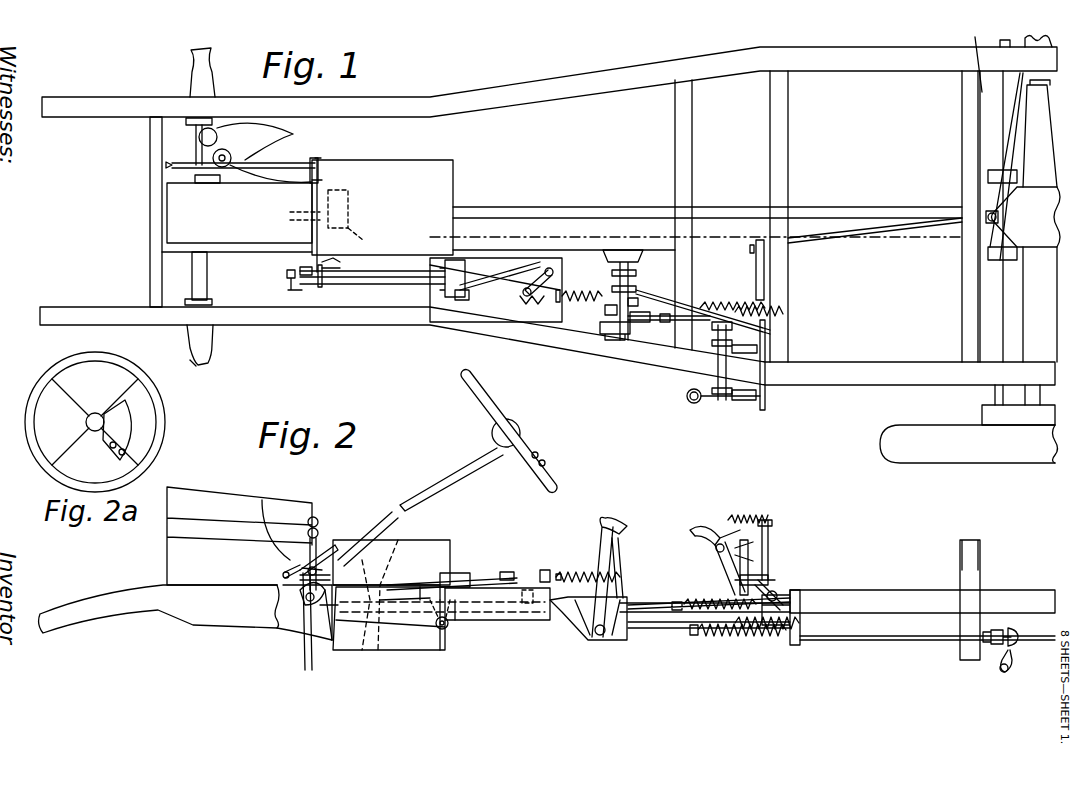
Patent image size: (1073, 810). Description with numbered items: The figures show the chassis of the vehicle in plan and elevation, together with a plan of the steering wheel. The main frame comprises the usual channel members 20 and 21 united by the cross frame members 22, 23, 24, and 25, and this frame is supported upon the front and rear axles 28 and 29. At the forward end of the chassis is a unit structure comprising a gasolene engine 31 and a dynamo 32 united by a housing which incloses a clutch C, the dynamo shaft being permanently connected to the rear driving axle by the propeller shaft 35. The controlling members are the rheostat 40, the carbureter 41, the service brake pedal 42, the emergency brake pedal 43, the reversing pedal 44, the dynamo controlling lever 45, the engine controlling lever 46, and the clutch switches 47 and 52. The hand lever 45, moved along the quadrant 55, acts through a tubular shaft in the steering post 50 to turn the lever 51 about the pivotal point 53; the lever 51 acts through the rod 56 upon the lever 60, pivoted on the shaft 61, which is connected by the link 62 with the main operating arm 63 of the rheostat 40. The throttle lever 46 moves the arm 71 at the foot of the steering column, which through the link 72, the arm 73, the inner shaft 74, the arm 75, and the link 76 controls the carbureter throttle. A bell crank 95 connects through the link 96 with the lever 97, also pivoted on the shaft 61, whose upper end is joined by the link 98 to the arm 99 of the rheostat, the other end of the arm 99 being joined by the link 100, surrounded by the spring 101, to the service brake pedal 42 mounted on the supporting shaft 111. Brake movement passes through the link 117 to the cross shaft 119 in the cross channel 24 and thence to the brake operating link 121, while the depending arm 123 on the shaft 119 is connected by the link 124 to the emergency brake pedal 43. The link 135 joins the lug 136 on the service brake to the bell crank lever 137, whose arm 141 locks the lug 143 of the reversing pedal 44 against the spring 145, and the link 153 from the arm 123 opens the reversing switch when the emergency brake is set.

In FIG. 1, the channel member 20 is at (472, 103).
In FIG. 1, the channel member 21 is at (498, 335).
In FIG. 2, the channel member 21 is at (828, 625).
In FIG. 1, the cross frame member 22 is at (155, 255).
In FIG. 1, the cross frame member 23 is at (692, 172).
In FIG. 1, the cross frame member 24 is at (788, 157).
In FIG. 1, the cross frame member 25 is at (962, 140).
In FIG. 1, the front axle 28 is at (207, 270).
In FIG. 1, the rear axle 29 is at (1040, 290).
In FIG. 1, the gasolene engine 31 is at (185, 205).
In FIG. 2, the gasolene engine 31 is at (204, 487).
In FIG. 1, the dynamo 32 is at (443, 188).
In FIG. 2, the dynamo 32 is at (448, 535).
In FIG. 1, the propeller shaft 35 is at (562, 208).
In FIG. 1, the rheostat 40 is at (478, 333).
In FIG. 1, the carbureter 41 is at (172, 167).
In FIG. 1, the service brake pedal 42 is at (643, 272).
In FIG. 1, the emergency brake pedal 43 is at (618, 340).
In FIG. 2, the emergency brake pedal 43 is at (618, 565).
In FIG. 1, the reversing pedal 44 is at (706, 400).
In FIG. 2, the reversing pedal 44 is at (705, 538).
In FIG. 2A, the dynamo controlling lever 45 is at (126, 454).
In FIG. 2, the dynamo controlling lever 45 is at (546, 462).
In FIG. 2A, the engine controlling lever 46 is at (118, 446).
In FIG. 2, the engine controlling lever 46 is at (538, 452).
In FIG. 2, the clutch switch 47 is at (335, 566).
In FIG. 2, the steering post 50 is at (425, 492).
In FIG. 1, the lever 51 is at (318, 300).
In FIG. 2, the lever 51 is at (318, 625).
In FIG. 2, the clutch switch 52 is at (285, 568).
In FIG. 2, the pivotal point 53 is at (298, 620).
In FIG. 2A, the quadrant 55 is at (135, 428).
In FIG. 1, the rod 56 is at (355, 310).
In FIG. 2, the rod 56 is at (410, 625).
In FIG. 1, the lever 60 is at (450, 305).
In FIG. 2, the lever 60 is at (450, 626).
In FIG. 1, the shaft 61 is at (455, 297).
In FIG. 2, the shaft 61 is at (450, 640).
In FIG. 1, the link 62 is at (490, 270).
In FIG. 2, the link 62 is at (505, 620).
In FIG. 1, the main operating arm 63 is at (548, 270).
In FIG. 1, the arm 71 is at (300, 282).
In FIG. 2, the arm 71 is at (308, 600).
In FIG. 2, the link 72 is at (262, 500).
In FIG. 2, the arm 73 is at (318, 522).
In FIG. 2, the inner shaft 74 is at (333, 543).
In FIG. 1, the arm 75 is at (318, 157).
In FIG. 1, the link 76 is at (282, 162).
In FIG. 2, the bell crank 95 is at (310, 627).
In FIG. 2, the link 96 is at (388, 595).
In FIG. 2, the lever 97 is at (432, 635).
In FIG. 1, the link 98 is at (490, 295).
In FIG. 2, the link 98 is at (480, 572).
In FIG. 1, the arm 99 is at (527, 285).
In FIG. 2, the arm 99 is at (515, 572).
In FIG. 1, the link 100 is at (548, 298).
In FIG. 2, the link 100 is at (552, 572).
In FIG. 2, the spring 101 is at (600, 575).
In FIG. 1, the supporting shaft 111 is at (594, 312).
In FIG. 2, the supporting shaft 111 is at (582, 640).
In FIG. 1, the link 117 is at (705, 268).
In FIG. 2, the link 117 is at (648, 628).
In FIG. 2, the cross shaft 119 is at (780, 585).
In FIG. 1, the brake operating link 121 is at (822, 238).
In FIG. 2, the depending arm 123 is at (800, 600).
In FIG. 1, the link 124 is at (650, 318).
In FIG. 2, the link 124 is at (690, 632).
In FIG. 1, the link 135 is at (660, 300).
In FIG. 2, the link 135 is at (648, 603).
In FIG. 1, the lug 136 is at (621, 303).
In FIG. 1, the bell crank lever 137 is at (738, 365).
In FIG. 2, the bell crank lever 137 is at (735, 580).
In FIG. 2, the arm 141 is at (760, 592).
In FIG. 2, the lug 143 is at (715, 556).
In FIG. 2, the spring 145 is at (740, 635).
In FIG. 1, the link 153 is at (770, 315).
In FIG. 2, the link 153 is at (768, 575).
In FIG. 1, the clutch C is at (365, 242).